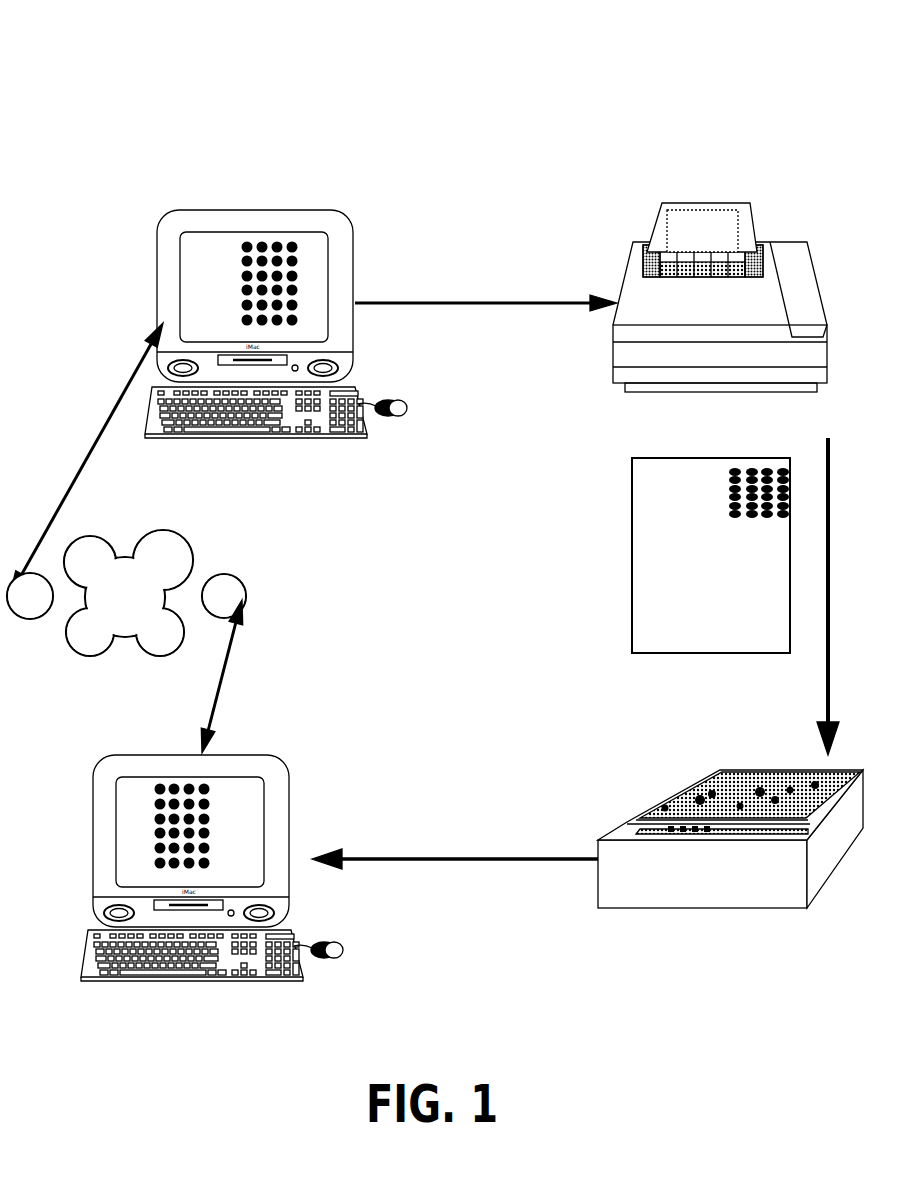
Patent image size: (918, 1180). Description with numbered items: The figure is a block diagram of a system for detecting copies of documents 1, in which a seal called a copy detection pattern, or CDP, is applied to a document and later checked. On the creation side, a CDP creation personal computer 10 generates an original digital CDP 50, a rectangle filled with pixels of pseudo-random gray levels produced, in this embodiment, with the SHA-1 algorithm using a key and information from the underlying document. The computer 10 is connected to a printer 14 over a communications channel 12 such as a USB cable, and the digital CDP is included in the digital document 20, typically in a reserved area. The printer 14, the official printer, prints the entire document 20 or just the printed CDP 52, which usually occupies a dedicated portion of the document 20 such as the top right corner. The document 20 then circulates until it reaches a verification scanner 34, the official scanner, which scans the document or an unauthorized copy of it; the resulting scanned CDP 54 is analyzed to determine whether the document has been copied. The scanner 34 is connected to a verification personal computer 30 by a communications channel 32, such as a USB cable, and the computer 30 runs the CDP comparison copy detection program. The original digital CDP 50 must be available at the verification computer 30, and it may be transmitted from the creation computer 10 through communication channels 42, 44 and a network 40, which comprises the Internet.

The system for detecting copies of documents 1 is at (112, 111).
The CDP creation personal computer 10 is at (157, 283).
The communications channel 12 is at (486, 291).
The printer 14 is at (807, 283).
The document 20 is at (686, 243).
The verification personal computer 30 is at (93, 797).
The communications channel 32 is at (455, 845).
The scanner 34 is at (650, 804).
The network 40 is at (110, 607).
The communication channel 42 is at (86, 459).
The communication channel 44 is at (231, 676).
The original digital CDP 50 is at (293, 261).
The printed CDP 52 is at (772, 470).
The scanned CDP 54 is at (205, 819).